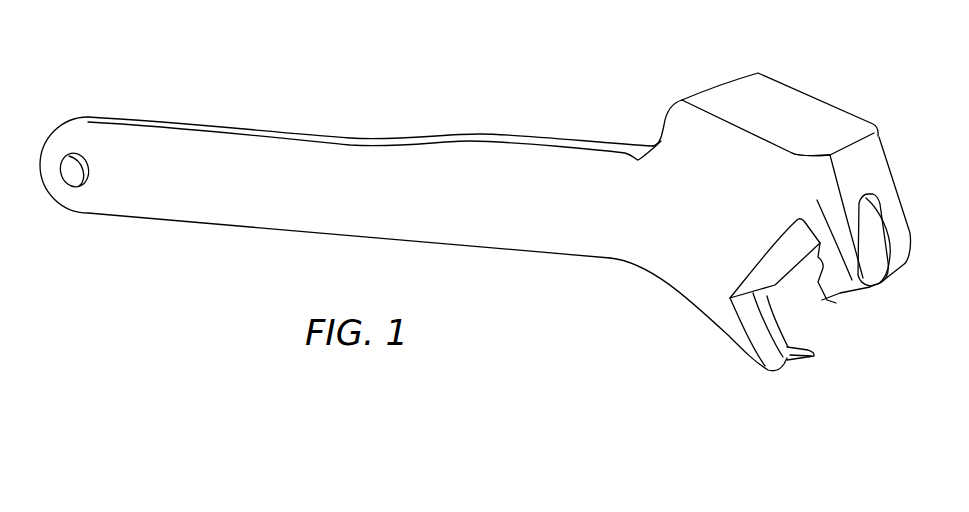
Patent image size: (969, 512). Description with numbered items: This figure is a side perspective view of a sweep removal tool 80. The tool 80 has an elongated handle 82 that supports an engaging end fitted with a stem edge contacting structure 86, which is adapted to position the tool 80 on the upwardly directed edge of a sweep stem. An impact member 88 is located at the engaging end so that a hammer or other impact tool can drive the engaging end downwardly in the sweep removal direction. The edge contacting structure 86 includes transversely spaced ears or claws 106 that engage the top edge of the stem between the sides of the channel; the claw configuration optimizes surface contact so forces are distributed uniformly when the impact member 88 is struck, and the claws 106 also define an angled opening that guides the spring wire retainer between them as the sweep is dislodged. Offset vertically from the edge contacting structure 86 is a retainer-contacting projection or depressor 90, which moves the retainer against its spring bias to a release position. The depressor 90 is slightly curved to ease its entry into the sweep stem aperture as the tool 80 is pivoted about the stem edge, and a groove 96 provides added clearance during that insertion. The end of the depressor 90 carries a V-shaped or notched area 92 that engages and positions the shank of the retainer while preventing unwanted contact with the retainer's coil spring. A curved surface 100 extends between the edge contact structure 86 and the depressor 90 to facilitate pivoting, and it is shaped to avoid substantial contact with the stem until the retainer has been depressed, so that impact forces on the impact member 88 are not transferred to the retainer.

The sweep removal tool 80 is at (422, 98).
The handle 82 is at (220, 212).
The impact member 88 is at (820, 118).
The claws 106 is at (860, 208).
The stem edge contacting structure 86 is at (878, 312).
The curved surface 100 is at (778, 257).
The depressor 90 is at (722, 353).
The groove 96 is at (773, 333).
The notched area 92 is at (797, 361).